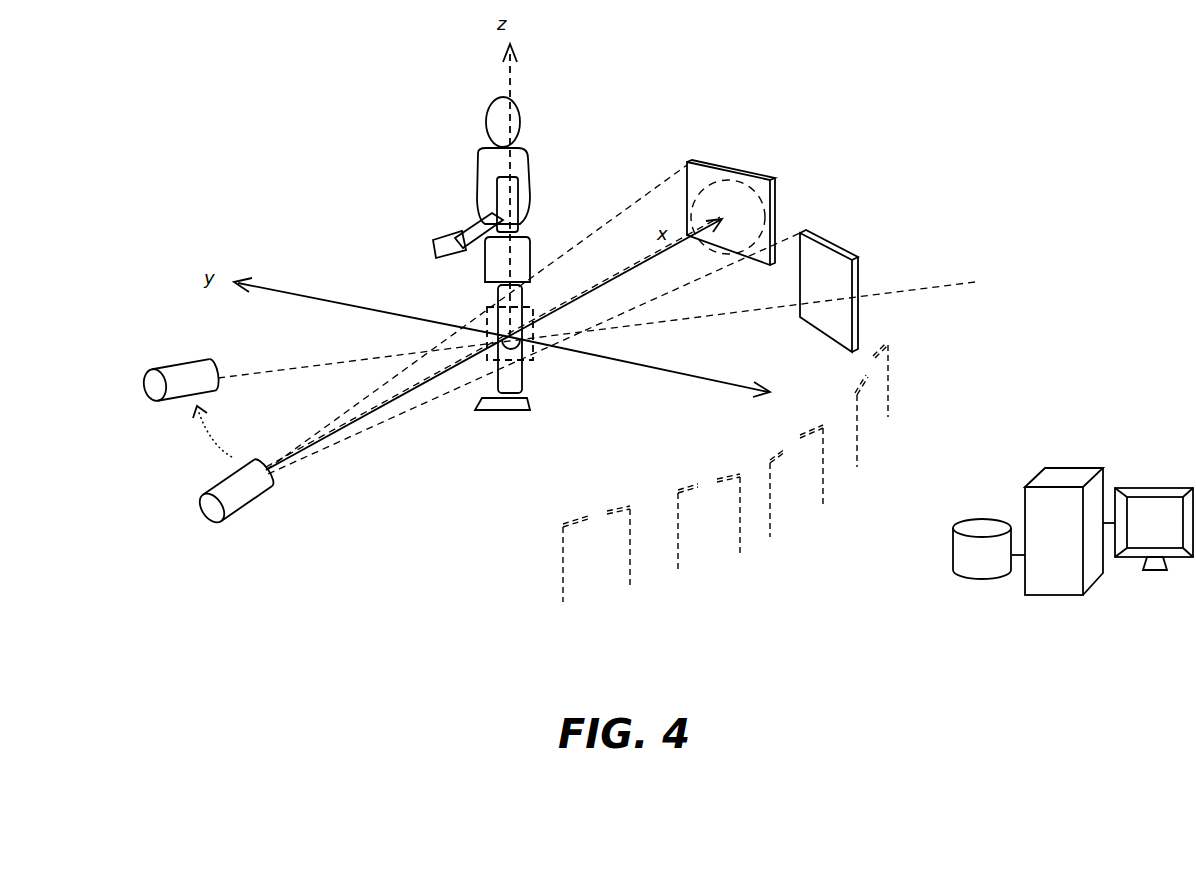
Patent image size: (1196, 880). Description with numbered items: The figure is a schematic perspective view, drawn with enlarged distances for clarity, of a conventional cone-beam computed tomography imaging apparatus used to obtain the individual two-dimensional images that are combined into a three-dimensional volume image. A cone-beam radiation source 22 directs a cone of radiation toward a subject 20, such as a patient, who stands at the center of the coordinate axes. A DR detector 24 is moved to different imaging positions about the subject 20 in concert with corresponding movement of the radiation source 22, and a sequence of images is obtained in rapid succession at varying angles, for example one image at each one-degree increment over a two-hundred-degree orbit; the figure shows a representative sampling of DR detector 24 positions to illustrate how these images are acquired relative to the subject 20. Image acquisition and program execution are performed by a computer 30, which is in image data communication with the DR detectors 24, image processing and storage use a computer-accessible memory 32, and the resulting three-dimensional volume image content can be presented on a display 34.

The subject 20 is at (520, 343).
The cone-beam radiation source 22 is at (238, 513).
The DR detector 24 is at (742, 172).
The computer 30 is at (1068, 560).
The computer-accessible memory 32 is at (997, 568).
The display 34 is at (1167, 538).